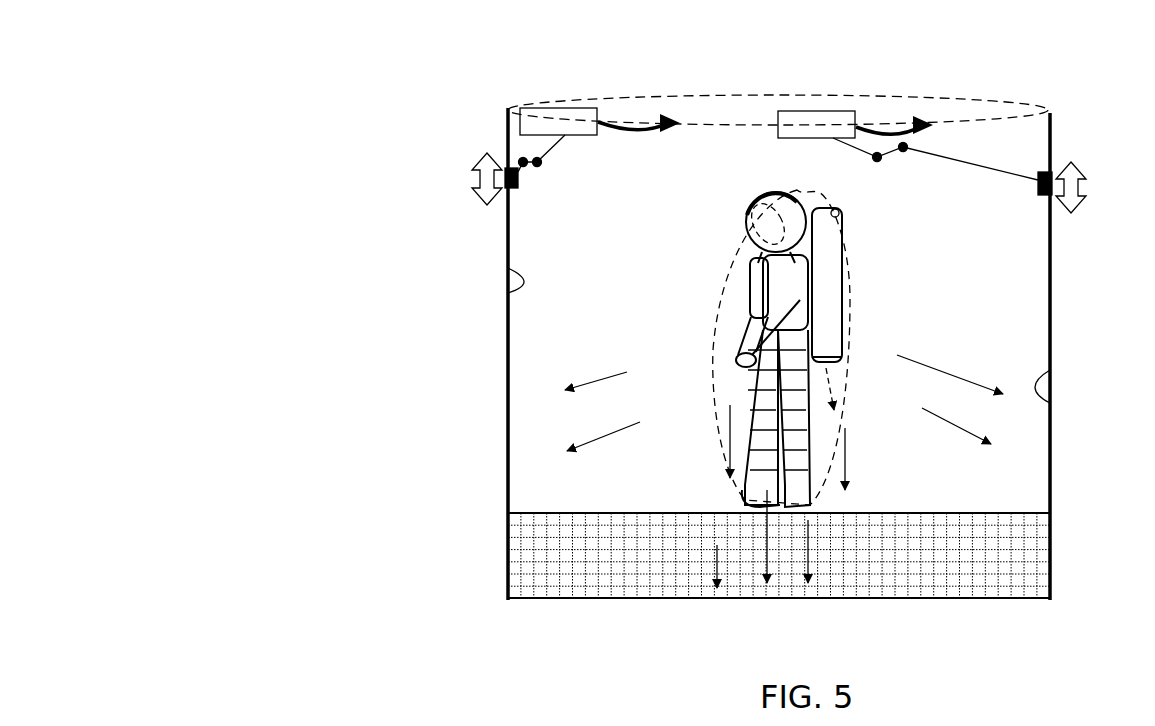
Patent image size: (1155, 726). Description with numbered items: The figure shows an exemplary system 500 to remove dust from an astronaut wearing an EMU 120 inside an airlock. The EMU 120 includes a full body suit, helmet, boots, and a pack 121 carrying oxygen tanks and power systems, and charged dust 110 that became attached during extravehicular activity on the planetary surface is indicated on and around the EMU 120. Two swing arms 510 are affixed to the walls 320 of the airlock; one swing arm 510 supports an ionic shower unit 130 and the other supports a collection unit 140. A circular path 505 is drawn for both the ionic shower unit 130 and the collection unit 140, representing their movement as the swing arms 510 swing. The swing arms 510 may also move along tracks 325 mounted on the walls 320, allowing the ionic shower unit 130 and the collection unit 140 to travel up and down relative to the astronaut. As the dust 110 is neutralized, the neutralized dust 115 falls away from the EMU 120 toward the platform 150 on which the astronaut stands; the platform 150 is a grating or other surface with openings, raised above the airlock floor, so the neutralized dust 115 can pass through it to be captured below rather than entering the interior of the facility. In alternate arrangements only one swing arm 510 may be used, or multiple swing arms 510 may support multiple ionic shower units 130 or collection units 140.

The system to remove dust 500 is at (347, 73).
The collection unit 140 is at (552, 112).
The ionic shower unit 130 is at (810, 118).
The circular path 505 is at (902, 95).
The walls 320 is at (1052, 132).
The tracks 325 is at (508, 290).
The swing arms 510 is at (552, 153).
The dust 110 is at (712, 339).
The neutralized dust 115 is at (793, 438).
The EMU 120 is at (800, 380).
The pack 121 is at (861, 392).
The platform 150 is at (522, 578).